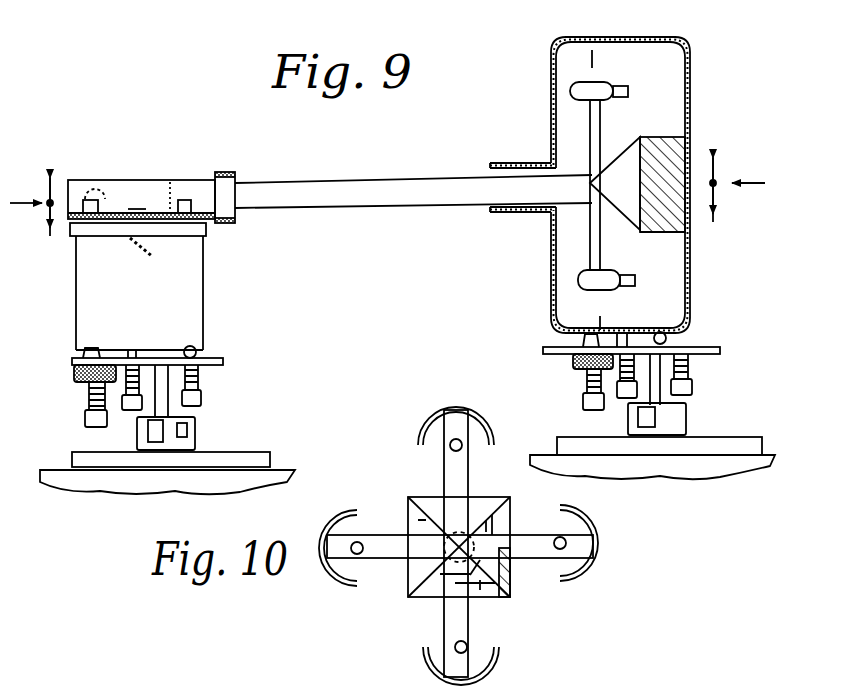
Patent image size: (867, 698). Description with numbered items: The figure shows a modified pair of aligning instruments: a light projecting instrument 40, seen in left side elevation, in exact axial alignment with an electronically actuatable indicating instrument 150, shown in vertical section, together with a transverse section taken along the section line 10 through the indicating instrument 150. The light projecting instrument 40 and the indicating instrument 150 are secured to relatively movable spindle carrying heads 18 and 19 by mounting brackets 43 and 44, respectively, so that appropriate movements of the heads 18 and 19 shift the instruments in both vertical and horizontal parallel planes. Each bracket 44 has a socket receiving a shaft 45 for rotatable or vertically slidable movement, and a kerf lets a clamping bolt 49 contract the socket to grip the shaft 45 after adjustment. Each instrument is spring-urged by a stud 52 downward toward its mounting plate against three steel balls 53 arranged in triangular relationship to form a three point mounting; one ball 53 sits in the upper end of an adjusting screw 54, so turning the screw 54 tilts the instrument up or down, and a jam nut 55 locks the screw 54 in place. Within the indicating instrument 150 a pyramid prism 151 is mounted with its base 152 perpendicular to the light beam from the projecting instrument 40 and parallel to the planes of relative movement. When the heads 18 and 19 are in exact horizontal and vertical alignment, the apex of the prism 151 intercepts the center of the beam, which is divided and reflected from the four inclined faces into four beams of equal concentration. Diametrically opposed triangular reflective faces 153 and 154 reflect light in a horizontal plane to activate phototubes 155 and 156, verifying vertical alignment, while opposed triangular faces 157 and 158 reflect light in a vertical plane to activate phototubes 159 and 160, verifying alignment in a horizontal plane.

In FIG. 9, the section line 10 is at (590, 58).
In FIG. 9, the spindle carrying head 18 is at (72, 480).
In FIG. 9, the spindle carrying head 19 is at (740, 465).
In FIG. 9, the light projecting instrument 40 is at (186, 170).
In FIG. 9, the mounting bracket 43 is at (218, 452).
In FIG. 9, the mounting bracket 44 is at (700, 442).
In FIG. 9, the shaft 45 is at (145, 426).
In FIG. 9, the clamping bolt 49 is at (186, 430).
In FIG. 9, the stud 52 is at (138, 352).
In FIG. 9, the steel ball 53 is at (82, 354).
In FIG. 9, the adjusting screw 54 is at (88, 400).
In FIG. 9, the jam nut 55 is at (73, 372).
In FIG. 9, the indicating instrument 150 is at (676, 40).
In FIG. 9, the pyramid prism 151 is at (686, 143).
In FIG. 9, the base 152 is at (648, 228).
In FIG. 10, the triangular reflective face 153 is at (428, 526).
In FIG. 9, the triangular reflective face 154 is at (614, 160).
In FIG. 10, the triangular reflective face 154 is at (498, 526).
In FIG. 10, the phototube 155 is at (333, 522).
In FIG. 10, the phototube 156 is at (598, 545).
In FIG. 10, the triangular face 157 is at (492, 598).
In FIG. 10, the triangular face 158 is at (480, 504).
In FIG. 9, the phototube 159 is at (590, 292).
In FIG. 10, the phototube 159 is at (495, 672).
In FIG. 9, the phototube 160 is at (596, 84).
In FIG. 10, the phototube 160 is at (420, 437).